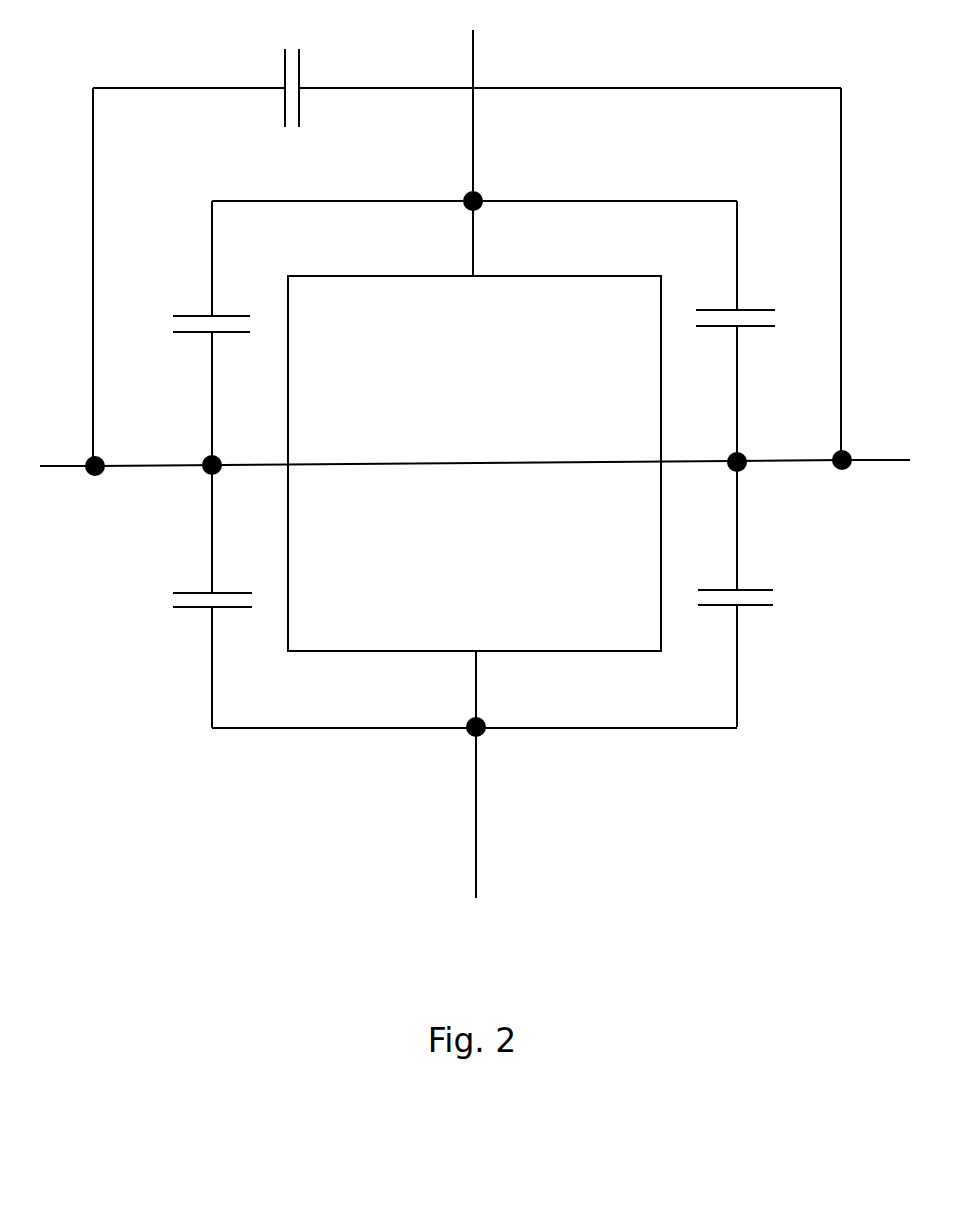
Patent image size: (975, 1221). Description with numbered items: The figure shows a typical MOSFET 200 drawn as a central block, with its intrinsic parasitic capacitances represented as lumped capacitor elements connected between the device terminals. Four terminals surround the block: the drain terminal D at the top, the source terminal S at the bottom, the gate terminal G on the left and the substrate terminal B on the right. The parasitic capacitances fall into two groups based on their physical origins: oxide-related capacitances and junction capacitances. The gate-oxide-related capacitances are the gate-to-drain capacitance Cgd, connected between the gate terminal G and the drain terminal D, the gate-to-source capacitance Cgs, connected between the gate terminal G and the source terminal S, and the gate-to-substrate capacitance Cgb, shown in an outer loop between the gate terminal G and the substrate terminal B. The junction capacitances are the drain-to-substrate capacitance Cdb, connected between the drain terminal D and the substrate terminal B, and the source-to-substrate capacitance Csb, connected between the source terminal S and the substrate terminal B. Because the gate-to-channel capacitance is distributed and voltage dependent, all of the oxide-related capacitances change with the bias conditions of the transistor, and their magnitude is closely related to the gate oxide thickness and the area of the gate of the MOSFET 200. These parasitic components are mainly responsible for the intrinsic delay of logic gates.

The MOSFET 200 is at (474, 463).
The gate-to-substrate capacitance Cgb is at (299, 108).
The gate-to-drain capacitance Cgd is at (192, 326).
The gate-to-source capacitance Cgs is at (193, 602).
The drain-to-substrate junction capacitance Cdb is at (755, 320).
The source-to-substrate junction capacitance Csb is at (755, 602).
The drain terminal D is at (472, 139).
The gate terminal G is at (56, 466).
The source terminal S is at (477, 791).
The substrate terminal B is at (887, 464).